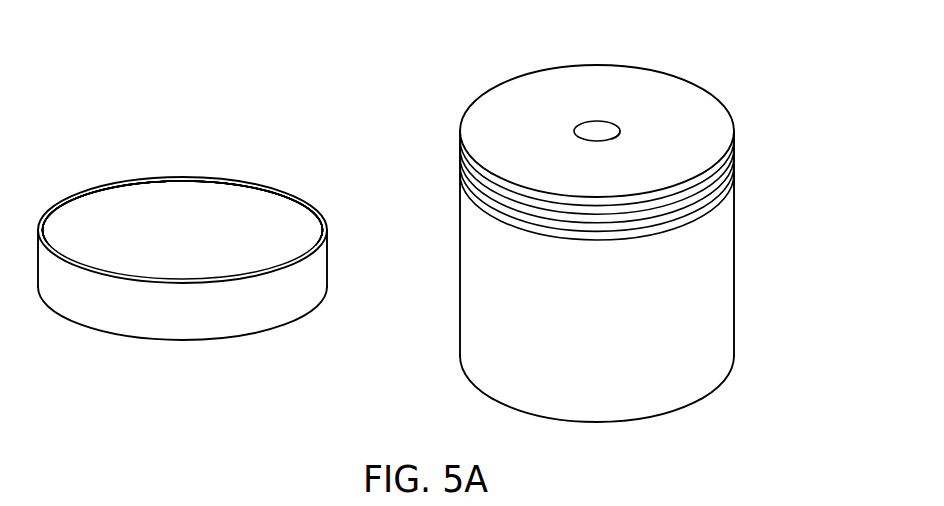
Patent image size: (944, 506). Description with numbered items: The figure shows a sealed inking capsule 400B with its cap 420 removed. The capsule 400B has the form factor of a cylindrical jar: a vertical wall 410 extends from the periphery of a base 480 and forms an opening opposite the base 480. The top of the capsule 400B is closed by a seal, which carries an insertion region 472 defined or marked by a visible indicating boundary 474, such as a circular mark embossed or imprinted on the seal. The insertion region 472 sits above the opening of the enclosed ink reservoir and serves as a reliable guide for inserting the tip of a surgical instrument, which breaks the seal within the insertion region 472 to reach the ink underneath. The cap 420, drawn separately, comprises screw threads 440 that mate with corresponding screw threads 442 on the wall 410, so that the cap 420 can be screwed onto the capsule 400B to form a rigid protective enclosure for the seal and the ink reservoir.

The sealed capsule 400B is at (645, 226).
The vertical wall 410 is at (734, 266).
The cap 420 is at (182, 228).
The screw threads 440 is at (140, 205).
The screw threads 442 is at (697, 218).
The insertion region 472 is at (597, 128).
The indicating boundary 474 is at (621, 131).
The base 480 is at (687, 405).